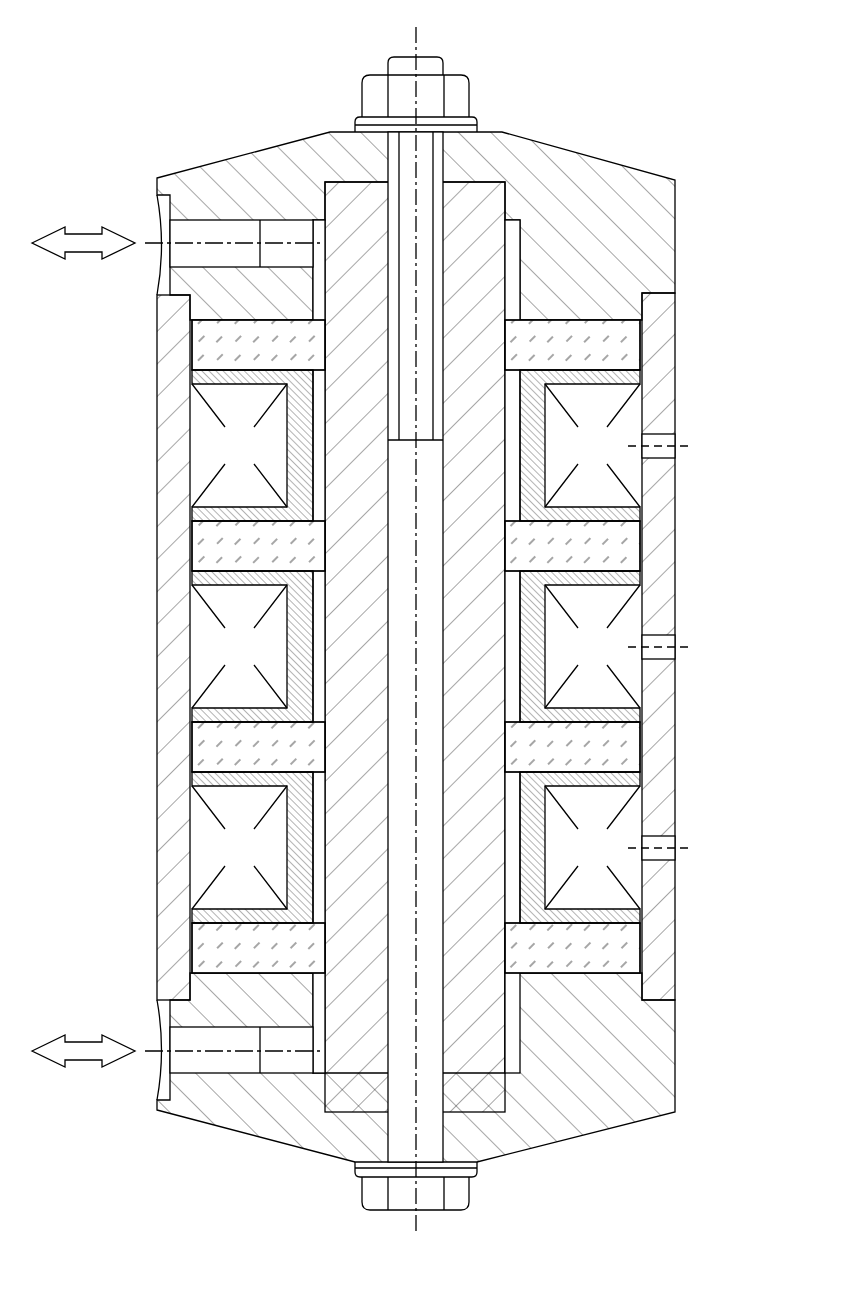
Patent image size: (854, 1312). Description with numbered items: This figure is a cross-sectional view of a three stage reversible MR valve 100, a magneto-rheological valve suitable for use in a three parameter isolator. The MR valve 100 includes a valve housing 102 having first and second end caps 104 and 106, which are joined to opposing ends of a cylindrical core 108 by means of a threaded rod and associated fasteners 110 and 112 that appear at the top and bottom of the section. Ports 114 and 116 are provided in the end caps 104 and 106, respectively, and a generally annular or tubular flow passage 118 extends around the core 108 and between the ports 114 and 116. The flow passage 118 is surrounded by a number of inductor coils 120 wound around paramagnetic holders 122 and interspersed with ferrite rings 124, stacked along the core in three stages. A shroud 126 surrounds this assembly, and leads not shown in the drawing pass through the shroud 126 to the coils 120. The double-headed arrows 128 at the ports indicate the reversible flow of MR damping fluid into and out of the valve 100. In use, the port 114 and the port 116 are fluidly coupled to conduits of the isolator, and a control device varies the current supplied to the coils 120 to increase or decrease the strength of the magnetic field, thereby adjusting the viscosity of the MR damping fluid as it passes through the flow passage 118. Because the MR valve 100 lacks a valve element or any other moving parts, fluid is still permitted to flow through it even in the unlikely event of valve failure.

The three stage reversible MR valve 100 is at (190, 90).
The valve housing 102 is at (674, 206).
The first end cap 104 is at (568, 148).
The second end cap 106 is at (603, 1130).
The cylindrical core 108 is at (505, 205).
The fastener 110 is at (472, 100).
The fastener 112 is at (468, 1190).
The port 114 is at (236, 228).
The port 116 is at (248, 1068).
The flow passage 118 is at (318, 467).
The inductor coils 120 is at (219, 460).
The paramagnetic holders 122 is at (306, 431).
The ferrite rings 124 is at (262, 328).
The shroud 126 is at (173, 553).
The direction of motion 128 is at (83, 235).